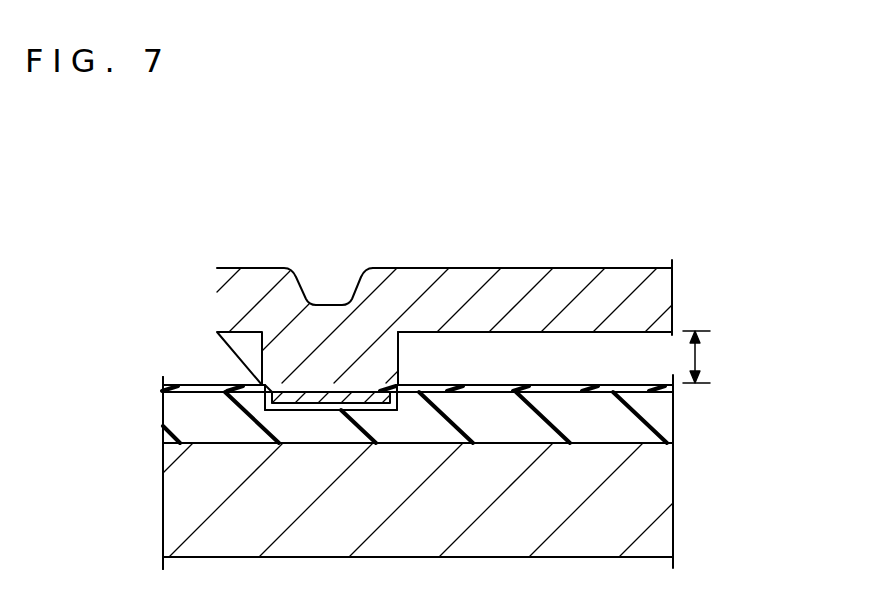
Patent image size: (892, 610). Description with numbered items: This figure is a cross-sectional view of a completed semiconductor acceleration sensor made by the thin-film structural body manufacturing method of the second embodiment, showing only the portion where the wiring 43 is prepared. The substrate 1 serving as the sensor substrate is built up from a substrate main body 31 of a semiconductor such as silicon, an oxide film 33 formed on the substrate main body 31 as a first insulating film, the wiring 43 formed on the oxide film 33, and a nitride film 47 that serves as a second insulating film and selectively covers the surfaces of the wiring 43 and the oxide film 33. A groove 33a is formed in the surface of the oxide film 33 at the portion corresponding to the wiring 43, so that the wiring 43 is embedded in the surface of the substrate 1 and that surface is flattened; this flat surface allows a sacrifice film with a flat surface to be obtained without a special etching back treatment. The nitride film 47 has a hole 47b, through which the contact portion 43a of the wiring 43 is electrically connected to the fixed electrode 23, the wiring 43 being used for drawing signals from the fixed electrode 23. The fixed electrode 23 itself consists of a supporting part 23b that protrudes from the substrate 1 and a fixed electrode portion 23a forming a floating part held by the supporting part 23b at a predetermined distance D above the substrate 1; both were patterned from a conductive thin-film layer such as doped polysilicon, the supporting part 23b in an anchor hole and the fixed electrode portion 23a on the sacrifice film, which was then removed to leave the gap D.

The substrate 1 is at (163, 493).
The fixed electrode 23 is at (217, 291).
The fixed electrode portion 23a is at (541, 267).
The supporting part 23b is at (399, 355).
The substrate main body 31 is at (675, 494).
The oxide film 33 is at (675, 424).
The groove 33a is at (372, 391).
The wiring 43 is at (323, 391).
The contact portion 43a is at (355, 391).
The nitride film 47 is at (675, 387).
The hole 47b is at (287, 386).
The predetermined distance D is at (698, 354).